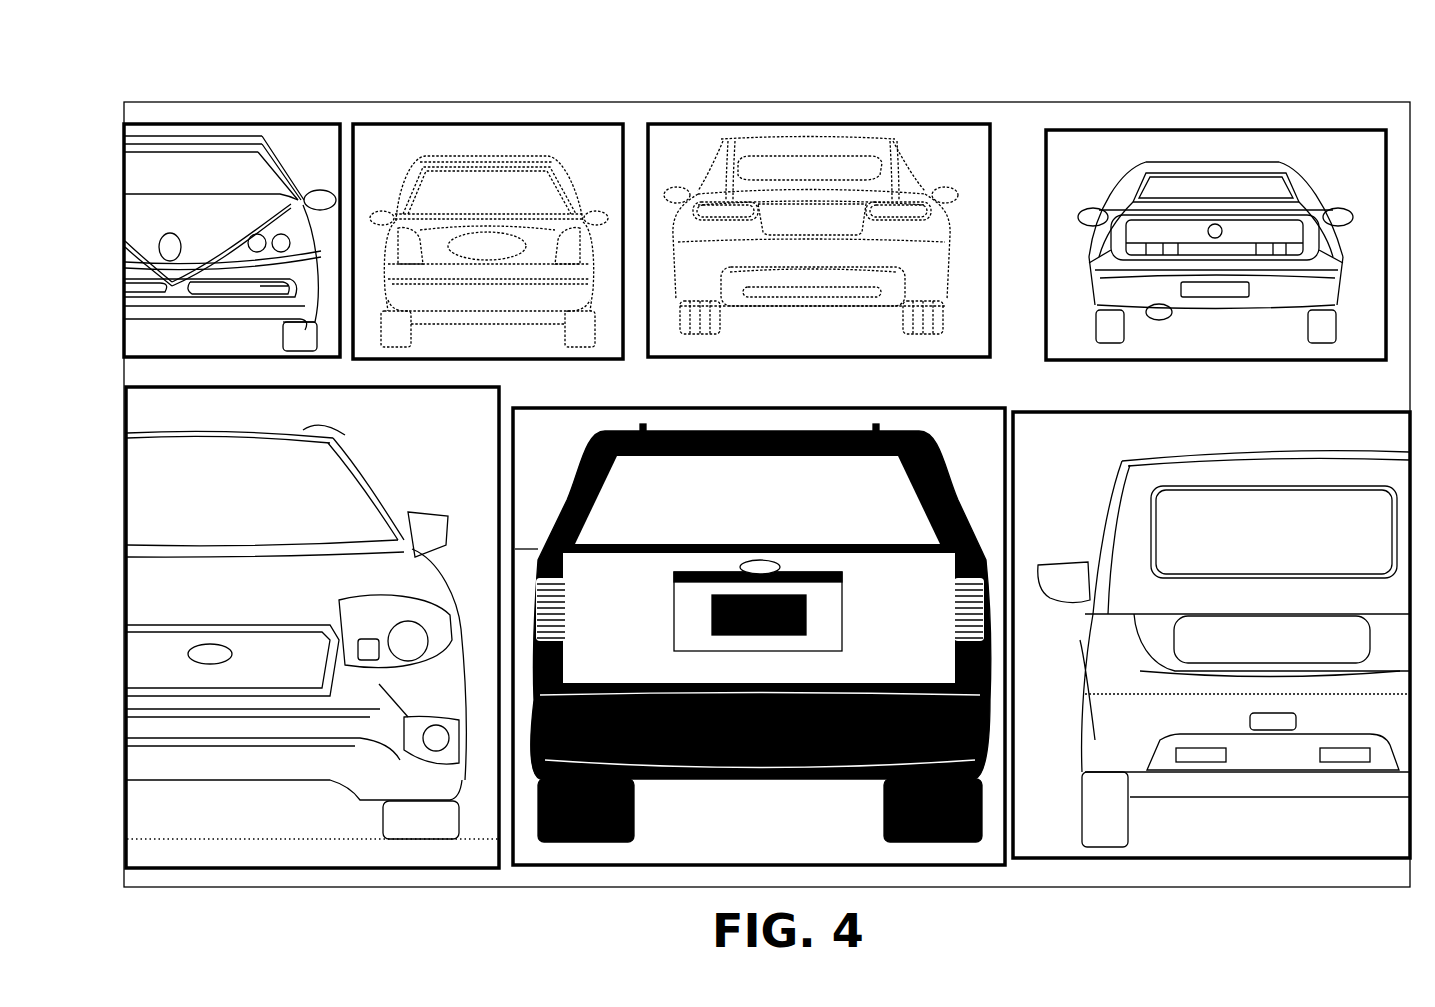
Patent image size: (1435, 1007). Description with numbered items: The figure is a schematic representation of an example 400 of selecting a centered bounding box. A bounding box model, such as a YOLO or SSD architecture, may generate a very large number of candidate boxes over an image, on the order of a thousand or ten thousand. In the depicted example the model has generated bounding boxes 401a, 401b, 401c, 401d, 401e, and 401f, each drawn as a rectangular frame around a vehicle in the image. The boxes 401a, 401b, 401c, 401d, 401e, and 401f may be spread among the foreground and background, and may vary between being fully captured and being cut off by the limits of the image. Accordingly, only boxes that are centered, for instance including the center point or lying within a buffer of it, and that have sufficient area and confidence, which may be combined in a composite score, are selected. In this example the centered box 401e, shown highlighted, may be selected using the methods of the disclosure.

The example of selecting a centered bounding box 400 is at (792, 48).
The bounding box 401a is at (295, 122).
The bounding box 401b is at (525, 125).
The bounding box 401c is at (878, 125).
The bounding box 401d is at (1102, 130).
The bounding box 401e is at (823, 406).
The bounding box 401f is at (1103, 410).